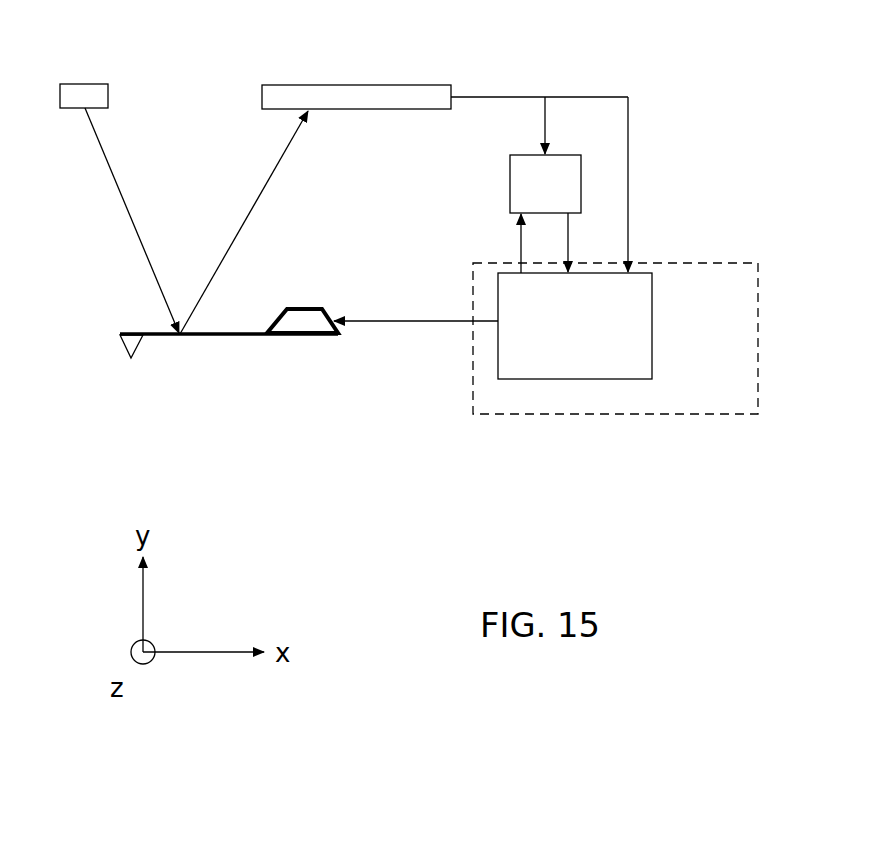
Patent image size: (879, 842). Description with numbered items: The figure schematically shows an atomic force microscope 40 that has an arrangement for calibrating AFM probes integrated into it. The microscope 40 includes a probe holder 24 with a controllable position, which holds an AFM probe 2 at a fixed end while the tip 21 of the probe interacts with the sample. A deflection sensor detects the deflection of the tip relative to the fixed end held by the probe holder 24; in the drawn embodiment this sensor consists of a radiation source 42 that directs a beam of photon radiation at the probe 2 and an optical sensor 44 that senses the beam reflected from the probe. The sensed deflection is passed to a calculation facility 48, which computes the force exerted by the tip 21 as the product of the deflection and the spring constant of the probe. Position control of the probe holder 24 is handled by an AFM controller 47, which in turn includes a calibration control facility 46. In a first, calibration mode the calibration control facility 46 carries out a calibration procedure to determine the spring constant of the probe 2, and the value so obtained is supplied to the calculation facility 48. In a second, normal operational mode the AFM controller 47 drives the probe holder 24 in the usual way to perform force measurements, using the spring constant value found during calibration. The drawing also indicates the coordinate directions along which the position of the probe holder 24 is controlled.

The microscope 40 is at (403, 420).
The radiation source 42 is at (84, 97).
The optical sensor 44 is at (343, 97).
The calculation facility 48 is at (545, 214).
The calibration control facility 46 is at (493, 326).
The AFM controller 47 is at (615, 338).
The probe holder 24 is at (297, 318).
The AFM probe 2 is at (178, 335).
The tip 21 is at (128, 345).